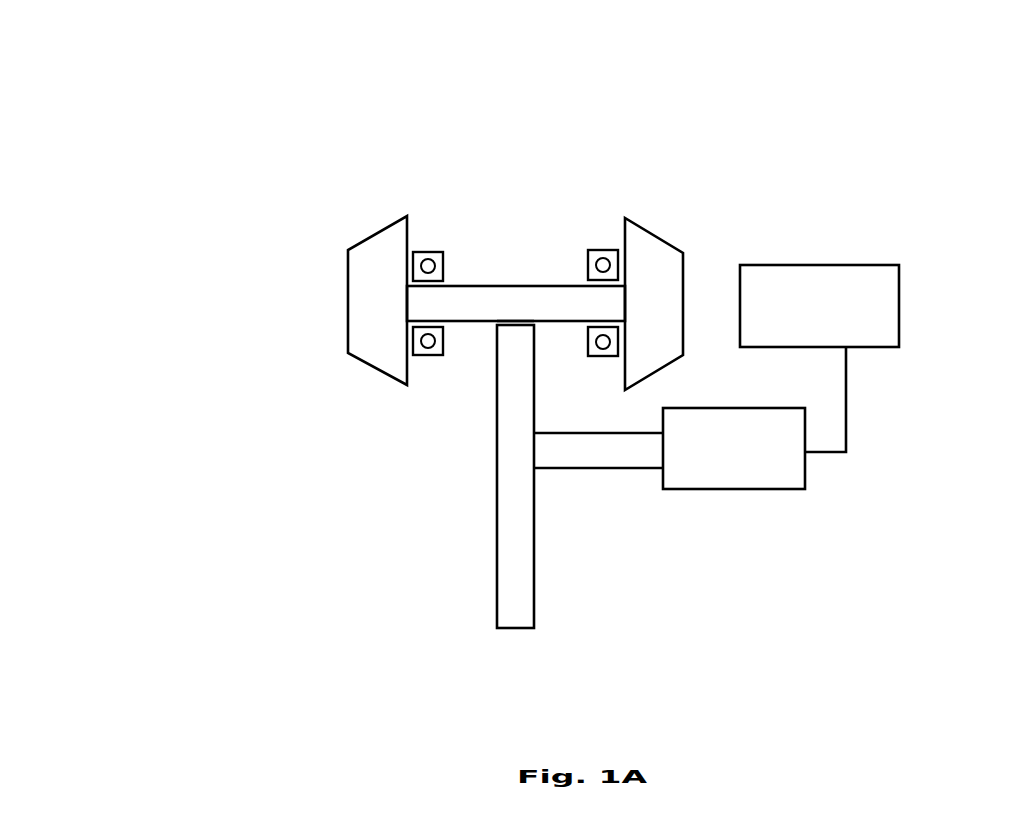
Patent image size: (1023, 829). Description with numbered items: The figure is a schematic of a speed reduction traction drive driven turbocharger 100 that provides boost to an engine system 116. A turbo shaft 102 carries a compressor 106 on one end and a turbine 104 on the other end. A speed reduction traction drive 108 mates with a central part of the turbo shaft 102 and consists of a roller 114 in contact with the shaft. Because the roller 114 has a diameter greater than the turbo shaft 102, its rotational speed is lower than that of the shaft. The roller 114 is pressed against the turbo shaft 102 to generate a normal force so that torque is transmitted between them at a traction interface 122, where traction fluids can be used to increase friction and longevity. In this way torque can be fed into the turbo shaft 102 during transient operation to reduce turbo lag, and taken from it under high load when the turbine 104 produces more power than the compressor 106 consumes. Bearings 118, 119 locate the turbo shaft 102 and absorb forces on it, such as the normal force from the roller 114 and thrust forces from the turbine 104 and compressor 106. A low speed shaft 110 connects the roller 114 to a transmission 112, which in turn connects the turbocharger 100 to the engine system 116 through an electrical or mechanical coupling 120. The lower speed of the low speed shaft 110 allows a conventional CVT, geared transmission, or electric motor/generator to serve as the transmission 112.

The speed reduction traction drive driven turbocharger 100 is at (250, 130).
The turbo shaft 102 is at (505, 293).
The turbine 104 is at (362, 298).
The compressor 106 is at (673, 243).
The speed reduction traction drive 108 is at (470, 351).
The low speed shaft 110 is at (610, 462).
The transmission 112 is at (778, 489).
The roller 114 is at (497, 513).
The engine system 116 is at (853, 265).
The bearing 118 is at (426, 252).
The bearing 119 is at (605, 250).
The electrical or mechanical coupling 120 is at (846, 395).
The traction interface 122 is at (516, 310).